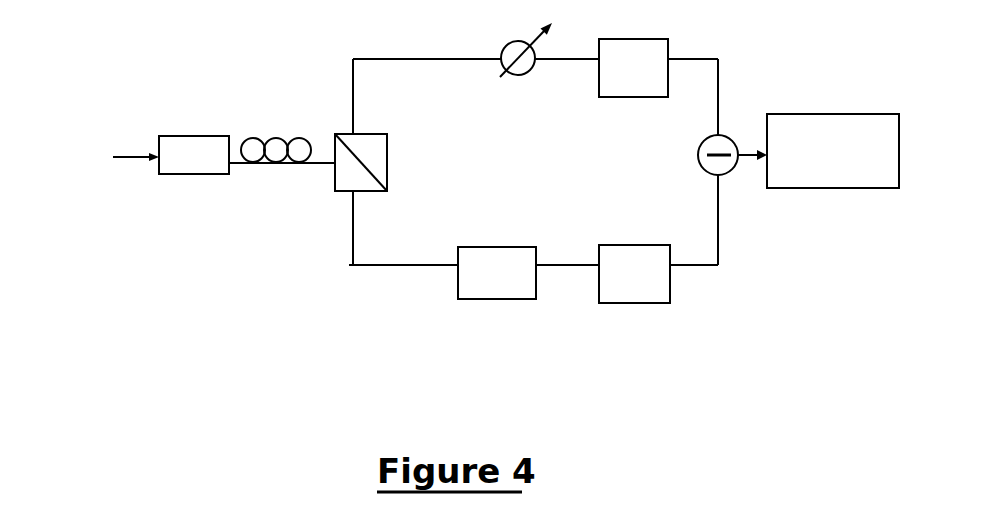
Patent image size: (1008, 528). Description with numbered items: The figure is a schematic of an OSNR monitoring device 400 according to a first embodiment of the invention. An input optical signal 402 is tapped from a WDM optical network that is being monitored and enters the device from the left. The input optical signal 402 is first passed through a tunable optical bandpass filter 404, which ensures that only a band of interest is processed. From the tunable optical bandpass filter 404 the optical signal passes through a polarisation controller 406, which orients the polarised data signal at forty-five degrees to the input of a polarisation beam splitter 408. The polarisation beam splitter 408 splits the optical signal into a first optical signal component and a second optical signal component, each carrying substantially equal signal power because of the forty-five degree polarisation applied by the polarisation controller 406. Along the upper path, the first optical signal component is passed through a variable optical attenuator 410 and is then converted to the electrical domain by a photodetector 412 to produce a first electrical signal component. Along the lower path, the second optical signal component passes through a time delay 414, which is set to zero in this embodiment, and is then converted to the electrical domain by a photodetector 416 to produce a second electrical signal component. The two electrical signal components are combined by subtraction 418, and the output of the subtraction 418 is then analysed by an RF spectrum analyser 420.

The OSNR monitoring device 400 is at (224, 78).
The input optical signal 402 is at (123, 147).
The tunable optical bandpass filter 404 is at (209, 165).
The polarisation controller 406 is at (282, 134).
The polarisation beam splitter 408 is at (381, 162).
The variable optical attenuator 410 is at (515, 50).
The photodetector 412 is at (652, 73).
The time delay 414 is at (497, 262).
The photodetector 416 is at (653, 279).
The subtraction 418 is at (713, 155).
The RF spectrum analyser 420 is at (853, 148).